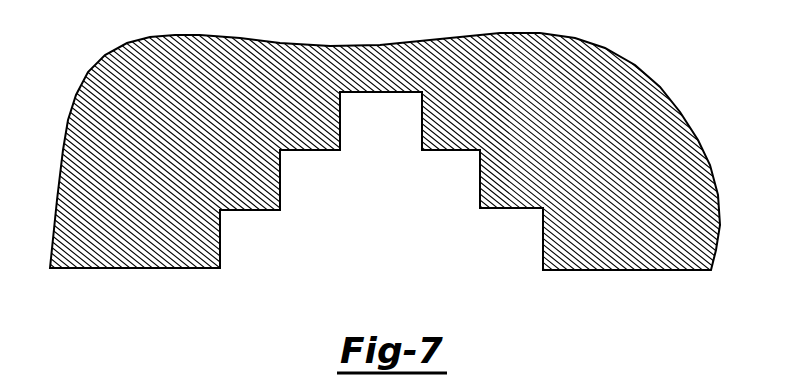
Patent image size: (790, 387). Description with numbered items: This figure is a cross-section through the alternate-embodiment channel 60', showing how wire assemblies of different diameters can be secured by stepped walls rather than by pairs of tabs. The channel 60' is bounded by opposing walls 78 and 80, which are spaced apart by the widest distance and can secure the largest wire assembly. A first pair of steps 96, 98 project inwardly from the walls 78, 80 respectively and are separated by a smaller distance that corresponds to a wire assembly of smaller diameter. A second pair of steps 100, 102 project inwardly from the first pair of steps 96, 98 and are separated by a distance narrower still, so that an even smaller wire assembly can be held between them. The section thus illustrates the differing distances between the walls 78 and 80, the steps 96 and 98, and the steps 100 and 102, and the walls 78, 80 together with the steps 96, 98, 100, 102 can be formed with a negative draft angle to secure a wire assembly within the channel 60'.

The channel 60' is at (385, 193).
The wall 78 is at (543, 246).
The wall 80 is at (220, 248).
The first step 96 is at (501, 210).
The first step 98 is at (252, 210).
The second step 100 is at (446, 150).
The second step 102 is at (304, 150).